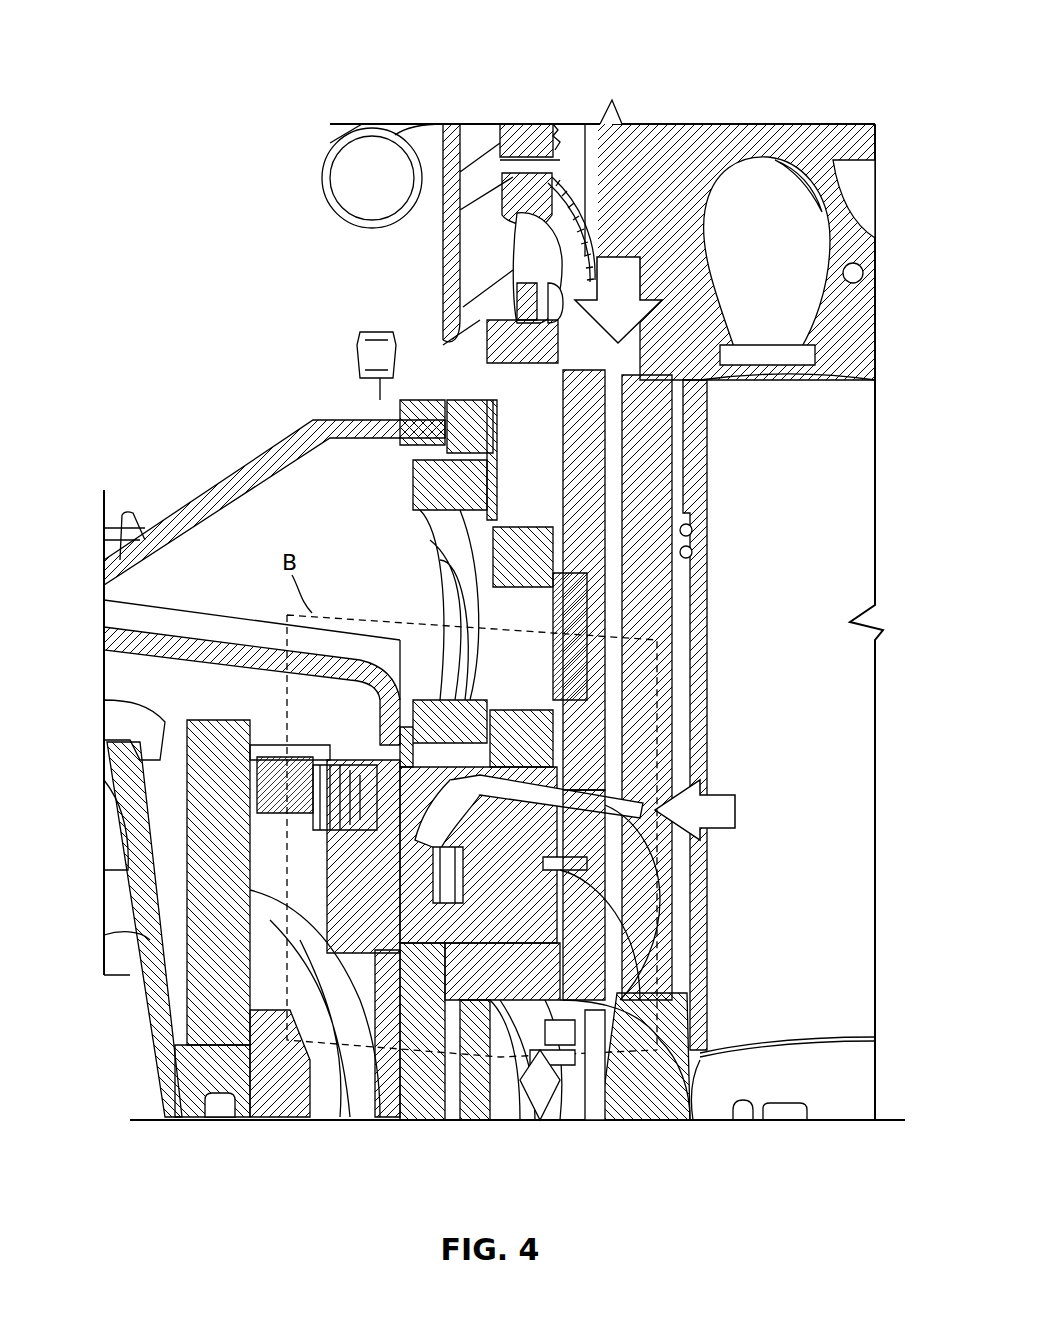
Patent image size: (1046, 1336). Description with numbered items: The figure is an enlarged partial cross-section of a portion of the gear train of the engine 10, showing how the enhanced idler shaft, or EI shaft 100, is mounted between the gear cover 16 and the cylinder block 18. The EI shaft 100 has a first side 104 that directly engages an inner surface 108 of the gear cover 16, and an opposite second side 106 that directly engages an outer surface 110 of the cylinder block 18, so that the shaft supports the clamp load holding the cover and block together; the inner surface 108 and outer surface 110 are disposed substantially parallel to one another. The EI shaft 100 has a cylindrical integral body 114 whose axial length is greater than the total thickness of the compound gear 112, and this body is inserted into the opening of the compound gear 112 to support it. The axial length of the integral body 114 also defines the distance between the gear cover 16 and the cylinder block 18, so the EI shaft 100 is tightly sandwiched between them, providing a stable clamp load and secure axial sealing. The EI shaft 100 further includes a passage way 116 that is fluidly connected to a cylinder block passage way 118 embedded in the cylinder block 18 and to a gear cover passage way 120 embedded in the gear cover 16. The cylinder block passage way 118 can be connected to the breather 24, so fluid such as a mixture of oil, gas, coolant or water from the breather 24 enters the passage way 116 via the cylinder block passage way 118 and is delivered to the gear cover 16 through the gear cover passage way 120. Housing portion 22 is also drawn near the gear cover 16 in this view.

The engine 10 is at (160, 85).
The breather 24 is at (680, 124).
The gear cover 16 is at (196, 492).
The compound gear 112 is at (418, 490).
The cylinder block passage way 118 is at (620, 460).
The cylinder block 18 is at (665, 570).
The housing 22 is at (170, 722).
The first side 104 is at (330, 812).
The gear cover passage way 120 is at (430, 878).
The passage way 116 is at (555, 810).
The second side 106 is at (565, 862).
The EI shaft 100 is at (585, 905).
The outer surface 110 is at (600, 955).
The inner surface 108 is at (432, 930).
The integral body 114 is at (495, 965).